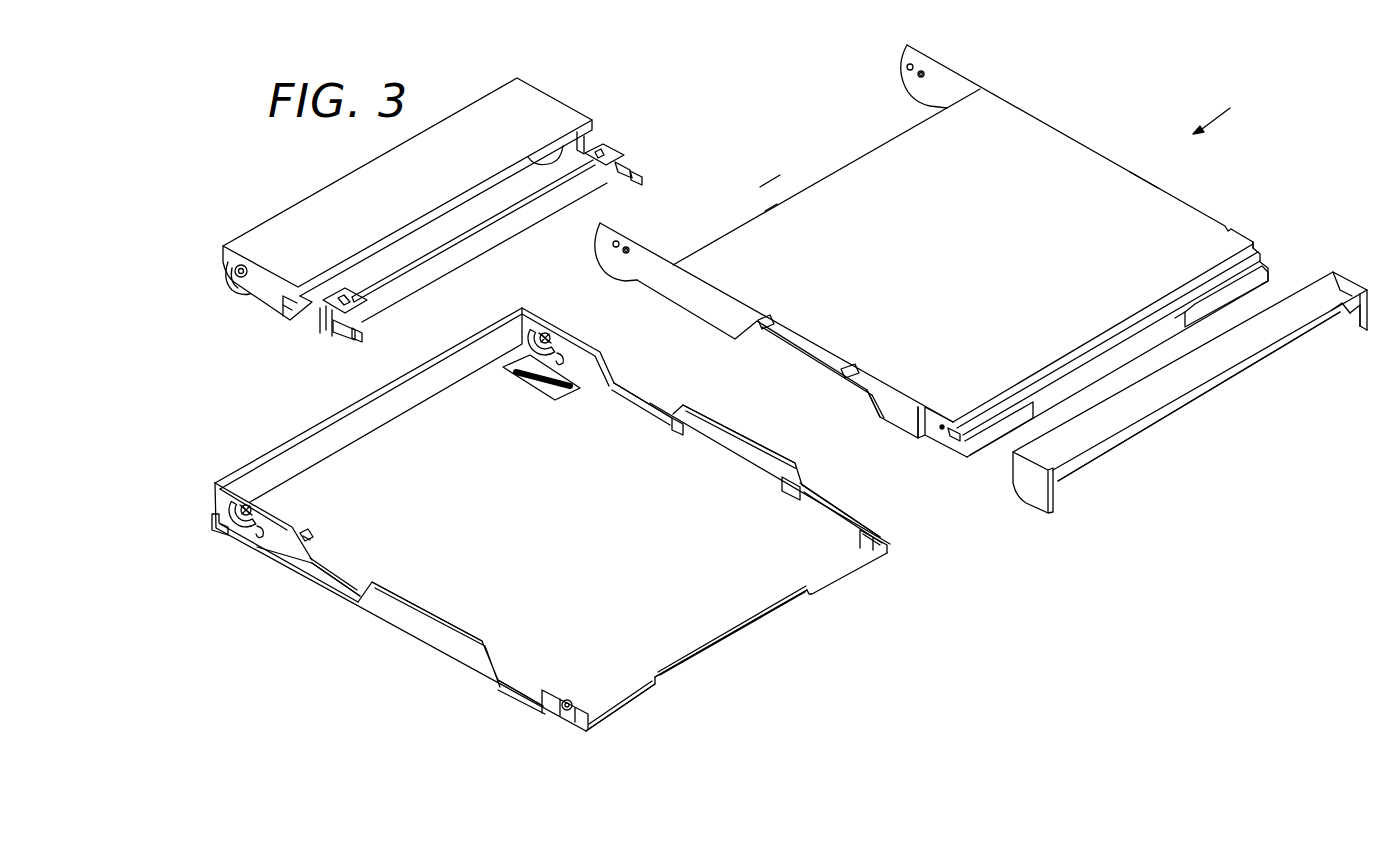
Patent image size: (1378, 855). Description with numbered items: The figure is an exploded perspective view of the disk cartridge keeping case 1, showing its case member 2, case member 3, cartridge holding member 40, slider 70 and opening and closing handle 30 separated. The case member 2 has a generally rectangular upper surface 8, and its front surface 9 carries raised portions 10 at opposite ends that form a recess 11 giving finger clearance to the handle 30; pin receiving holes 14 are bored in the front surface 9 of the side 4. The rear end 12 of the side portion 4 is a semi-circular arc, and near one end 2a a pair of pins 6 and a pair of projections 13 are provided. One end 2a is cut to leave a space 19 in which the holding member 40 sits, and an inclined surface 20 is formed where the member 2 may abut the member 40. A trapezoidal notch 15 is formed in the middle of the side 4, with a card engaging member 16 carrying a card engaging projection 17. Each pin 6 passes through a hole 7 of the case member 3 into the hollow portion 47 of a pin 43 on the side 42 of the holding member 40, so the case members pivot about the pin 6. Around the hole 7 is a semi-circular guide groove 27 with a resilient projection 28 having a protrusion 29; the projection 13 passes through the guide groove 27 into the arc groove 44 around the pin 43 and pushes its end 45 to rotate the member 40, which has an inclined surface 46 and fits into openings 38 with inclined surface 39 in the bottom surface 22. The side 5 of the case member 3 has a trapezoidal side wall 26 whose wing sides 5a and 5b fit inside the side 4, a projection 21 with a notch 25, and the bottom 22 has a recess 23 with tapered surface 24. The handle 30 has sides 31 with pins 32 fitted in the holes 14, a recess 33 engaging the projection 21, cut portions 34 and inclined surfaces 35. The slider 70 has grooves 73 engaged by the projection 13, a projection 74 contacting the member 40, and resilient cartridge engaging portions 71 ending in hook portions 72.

The disk cartridge keeping case 1 is at (1219, 111).
The case member 2 is at (1090, 150).
The one end 2a is at (897, 62).
The case member 3 is at (422, 646).
The side portion 4 is at (697, 298).
The side 5 is at (345, 605).
The side 5a is at (510, 680).
The side 5b is at (310, 578).
The pin 6 is at (922, 82).
The hole 7 is at (246, 503).
The upper surface 8 is at (1158, 200).
The front surface 9 is at (1140, 345).
The raised portions 10 is at (1200, 293).
The recess 11 is at (1170, 318).
The rear end 12 is at (950, 85).
The projections 13 is at (905, 70).
The pin receiving holes 14 is at (937, 432).
The trapezoidal notch 15 is at (773, 350).
The card engaging member 16 is at (812, 370).
The card engaging projection 17 is at (765, 320).
The space 19 is at (800, 172).
The inclined surface 20 is at (777, 204).
The projection 21 is at (570, 700).
The bottom surface 22 is at (690, 640).
The recess 23 is at (742, 640).
The tapered surface 24 is at (780, 608).
The notch 25 is at (560, 713).
The trapezoidal side wall 26 is at (395, 618).
The guide groove 27 is at (237, 527).
The resilient projection 28 is at (258, 548).
The protrusion 29 is at (265, 525).
The opening and closing handle 30 is at (1145, 402).
The sides 31 is at (1030, 490).
The pins 32 is at (1333, 318).
The recess 33 is at (1322, 290).
The cut portions 34 is at (1357, 328).
The inclined surfaces 35 is at (1347, 322).
The openings 38 is at (530, 380).
The inclined surface 39 is at (565, 395).
The cartridge holding member 40 is at (475, 118).
The side 42 is at (588, 137).
The pin 43 is at (250, 268).
The groove 44 is at (237, 260).
The end 45 is at (250, 296).
The inclined surface 46 is at (548, 160).
The hollow portion 47 is at (232, 282).
The slider 70 is at (463, 253).
The cartridge engaging portions 71 is at (642, 175).
The hook portion 72 is at (630, 160).
The groove 73 is at (322, 326).
The projection 74 is at (605, 175).